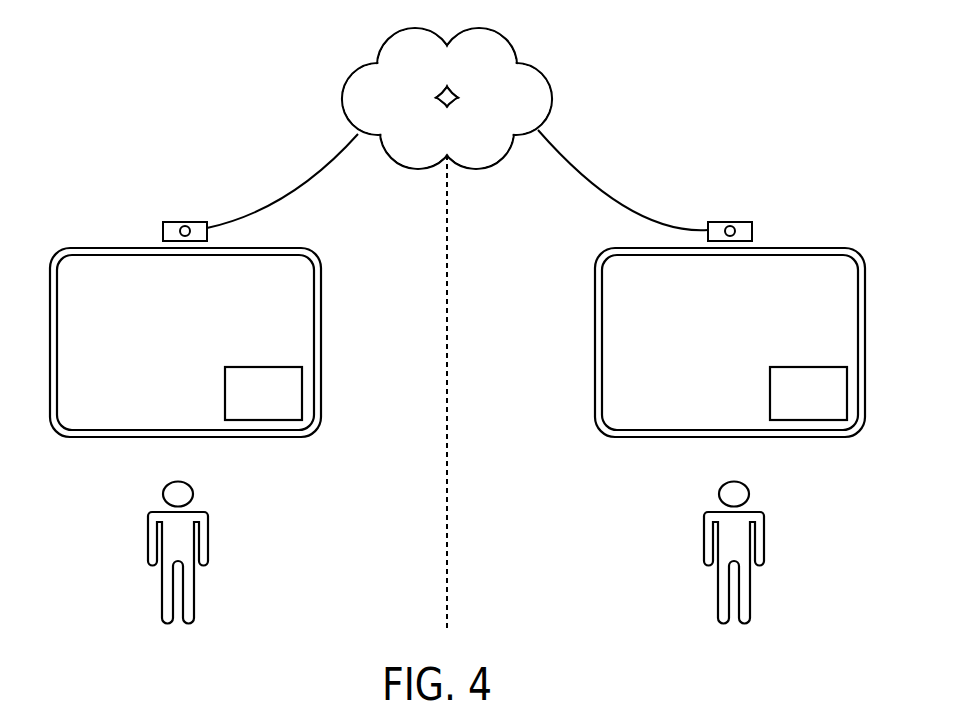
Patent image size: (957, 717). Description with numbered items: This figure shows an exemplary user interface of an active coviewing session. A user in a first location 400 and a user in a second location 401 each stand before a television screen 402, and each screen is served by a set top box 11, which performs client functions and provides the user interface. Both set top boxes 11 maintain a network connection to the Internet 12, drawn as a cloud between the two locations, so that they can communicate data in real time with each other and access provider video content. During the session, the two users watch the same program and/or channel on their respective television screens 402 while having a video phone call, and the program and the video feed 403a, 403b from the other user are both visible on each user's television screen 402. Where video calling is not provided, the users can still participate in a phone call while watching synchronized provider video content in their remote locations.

The set top box 11 is at (188, 222).
The Internet 12 is at (439, 109).
The user in a first location 400 is at (213, 525).
The user in a second location 401 is at (777, 525).
The television screen 402 is at (166, 356).
The video feed 403a is at (242, 404).
The video feed 403b is at (786, 404).